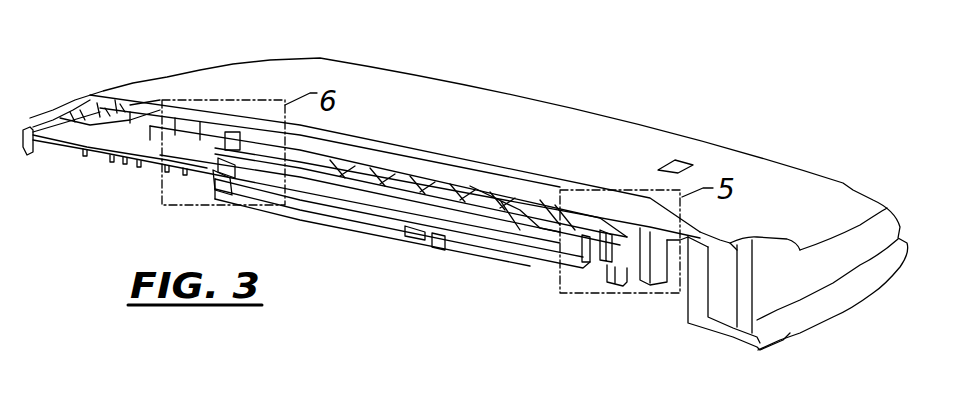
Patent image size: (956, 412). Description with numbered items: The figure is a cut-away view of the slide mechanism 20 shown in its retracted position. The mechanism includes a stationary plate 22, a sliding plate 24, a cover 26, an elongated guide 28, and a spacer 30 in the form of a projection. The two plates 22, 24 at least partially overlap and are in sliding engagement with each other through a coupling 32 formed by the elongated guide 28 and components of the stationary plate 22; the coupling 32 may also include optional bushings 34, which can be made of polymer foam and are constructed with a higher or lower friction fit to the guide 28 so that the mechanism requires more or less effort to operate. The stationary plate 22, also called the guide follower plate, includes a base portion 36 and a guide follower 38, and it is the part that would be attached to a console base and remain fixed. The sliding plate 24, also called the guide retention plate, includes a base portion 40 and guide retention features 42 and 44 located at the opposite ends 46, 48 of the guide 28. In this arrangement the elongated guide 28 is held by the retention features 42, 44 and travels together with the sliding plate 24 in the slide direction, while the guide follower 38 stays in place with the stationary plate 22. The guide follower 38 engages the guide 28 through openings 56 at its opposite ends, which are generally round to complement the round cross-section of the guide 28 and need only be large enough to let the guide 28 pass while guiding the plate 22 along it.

The slide mechanism 20 is at (637, 91).
The stationary plate 22 is at (117, 140).
The sliding plate 24 is at (143, 108).
The cover 26 is at (195, 78).
The elongated guide 28 is at (230, 160).
The spacer 30 is at (640, 228).
The coupling 32 is at (442, 247).
The bushings 34 is at (563, 263).
The base portion 36 is at (88, 147).
The guide follower 38 is at (505, 200).
The base portion 40 is at (685, 327).
The guide retention feature 42 is at (647, 277).
The guide retention feature 44 is at (227, 133).
The end of guide 46 is at (622, 228).
The end of guide 48 is at (227, 180).
The openings 56 is at (422, 222).